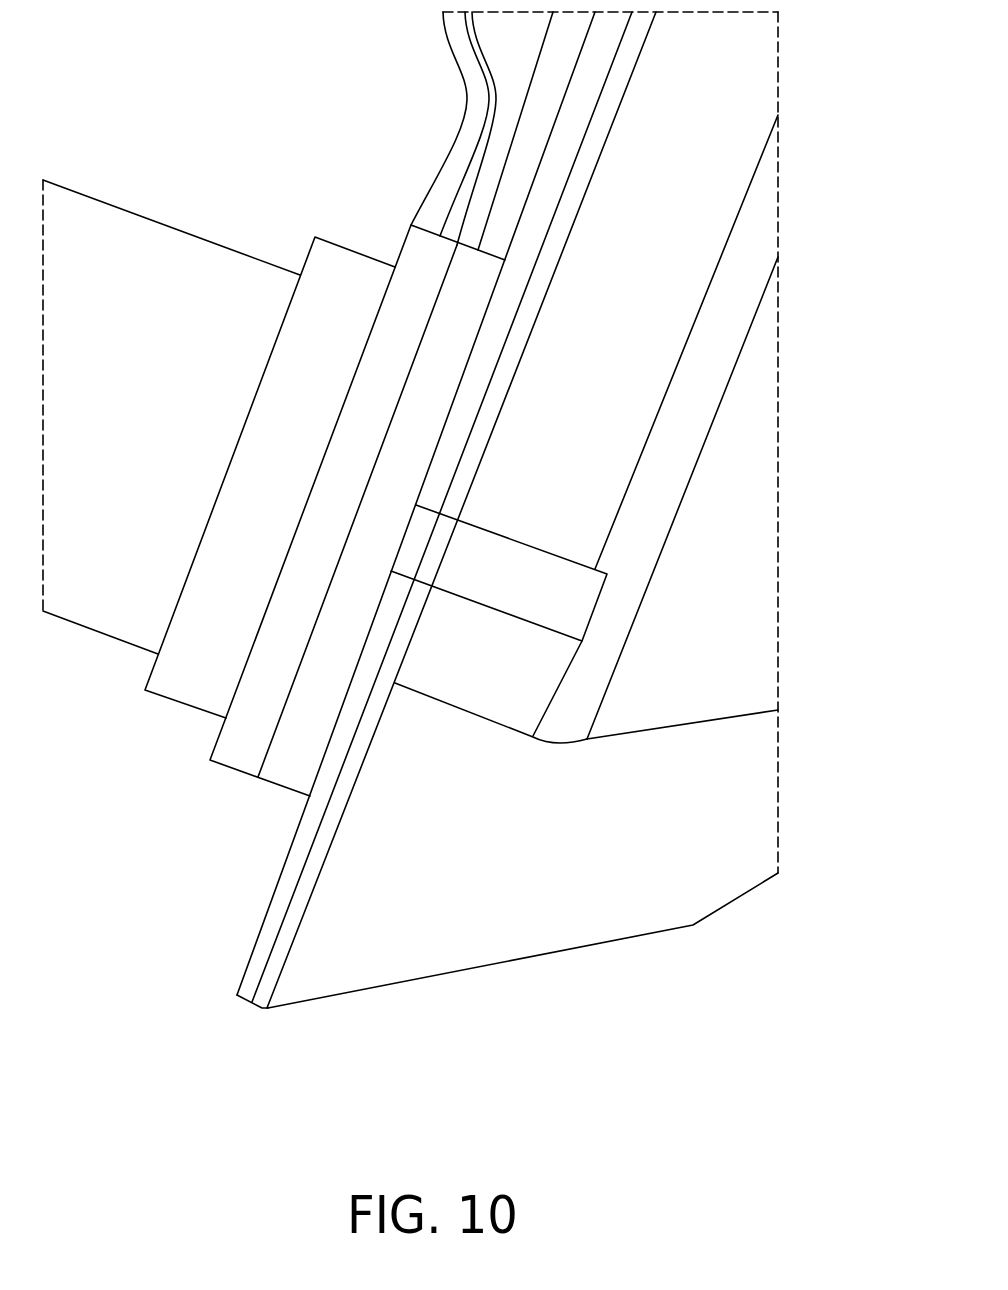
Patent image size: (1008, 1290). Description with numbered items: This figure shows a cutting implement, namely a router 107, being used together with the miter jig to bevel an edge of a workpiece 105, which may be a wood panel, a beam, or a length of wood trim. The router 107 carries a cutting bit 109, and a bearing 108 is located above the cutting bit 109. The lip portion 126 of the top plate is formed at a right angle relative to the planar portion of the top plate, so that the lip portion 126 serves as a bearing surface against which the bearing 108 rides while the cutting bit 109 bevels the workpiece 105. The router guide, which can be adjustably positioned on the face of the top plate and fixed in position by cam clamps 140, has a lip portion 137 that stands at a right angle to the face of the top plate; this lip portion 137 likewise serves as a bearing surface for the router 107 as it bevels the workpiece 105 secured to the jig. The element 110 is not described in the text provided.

The workpiece 105 is at (662, 712).
The router 107 is at (163, 240).
The bearing 108 is at (417, 567).
The cutting bit 109 is at (493, 593).
The housing / base 110 is at (518, 928).
The lip portion of the top plate 126 is at (472, 393).
The lip portion of the router guide 137 is at (517, 188).
The cam clamps 140 is at (447, 172).